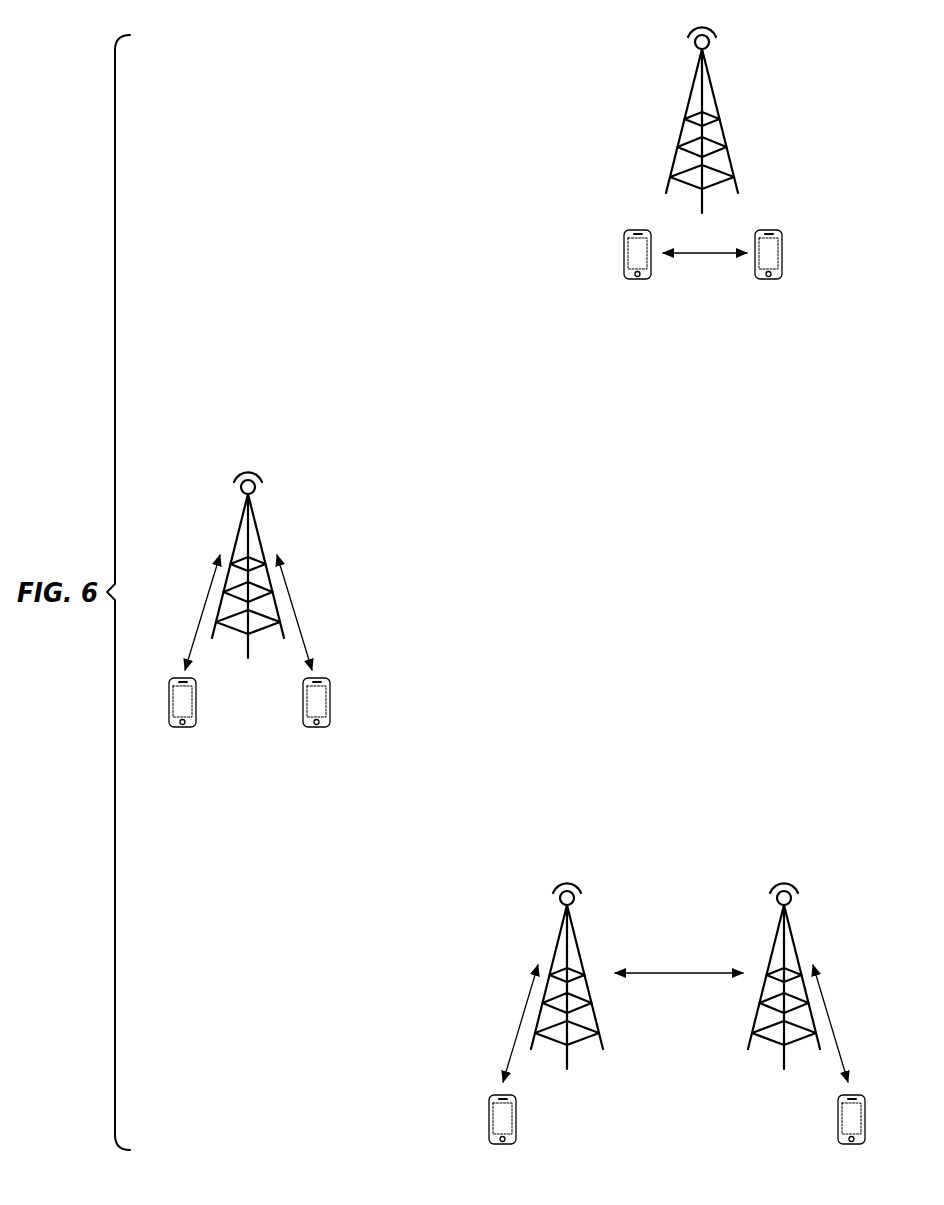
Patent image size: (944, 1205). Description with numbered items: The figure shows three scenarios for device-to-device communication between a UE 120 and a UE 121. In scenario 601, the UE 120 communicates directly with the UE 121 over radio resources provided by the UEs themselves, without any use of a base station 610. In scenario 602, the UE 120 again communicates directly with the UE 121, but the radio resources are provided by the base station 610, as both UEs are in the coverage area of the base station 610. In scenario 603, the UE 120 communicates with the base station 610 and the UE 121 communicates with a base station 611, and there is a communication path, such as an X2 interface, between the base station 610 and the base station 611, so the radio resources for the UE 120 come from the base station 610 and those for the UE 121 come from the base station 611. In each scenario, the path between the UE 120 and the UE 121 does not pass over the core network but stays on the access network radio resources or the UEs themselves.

The scenario 601 is at (777, 47).
The scenario 602 is at (320, 493).
The scenario 603 is at (595, 803).
The base station 610 is at (673, 165).
The base station 611 is at (772, 953).
The UE 120 is at (624, 258).
The UE 121 is at (783, 252).